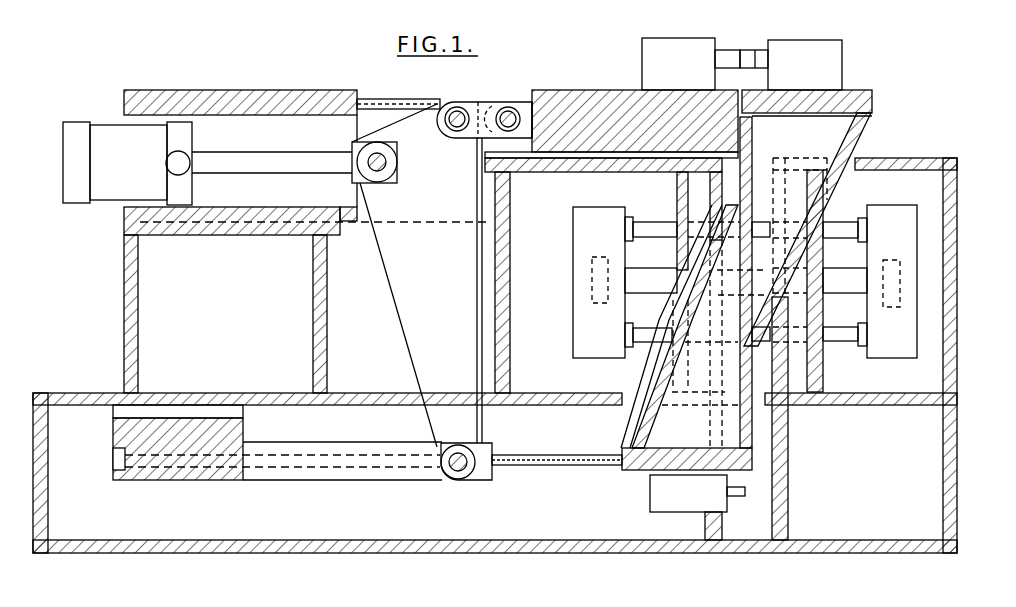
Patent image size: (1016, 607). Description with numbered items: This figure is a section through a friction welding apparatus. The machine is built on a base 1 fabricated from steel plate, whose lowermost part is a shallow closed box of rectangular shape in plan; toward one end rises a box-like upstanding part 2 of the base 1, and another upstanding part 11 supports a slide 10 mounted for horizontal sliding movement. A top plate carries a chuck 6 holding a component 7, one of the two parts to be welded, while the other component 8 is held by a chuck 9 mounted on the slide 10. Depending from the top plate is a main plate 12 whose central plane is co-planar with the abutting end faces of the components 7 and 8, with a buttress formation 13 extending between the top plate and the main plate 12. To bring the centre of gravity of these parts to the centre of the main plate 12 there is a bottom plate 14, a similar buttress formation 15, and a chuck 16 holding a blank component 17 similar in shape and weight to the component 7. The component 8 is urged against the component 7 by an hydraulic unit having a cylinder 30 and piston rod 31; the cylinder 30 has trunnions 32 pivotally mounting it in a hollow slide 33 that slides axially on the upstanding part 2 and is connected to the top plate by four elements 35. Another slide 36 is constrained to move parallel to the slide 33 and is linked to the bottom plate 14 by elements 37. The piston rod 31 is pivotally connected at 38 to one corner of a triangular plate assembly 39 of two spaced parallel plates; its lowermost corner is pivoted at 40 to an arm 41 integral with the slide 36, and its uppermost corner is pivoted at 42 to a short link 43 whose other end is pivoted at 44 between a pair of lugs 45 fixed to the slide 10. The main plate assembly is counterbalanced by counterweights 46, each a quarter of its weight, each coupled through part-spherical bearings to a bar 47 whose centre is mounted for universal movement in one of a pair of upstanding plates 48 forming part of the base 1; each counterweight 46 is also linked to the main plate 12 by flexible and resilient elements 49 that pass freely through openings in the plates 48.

The base 1 is at (443, 546).
The upstanding part 2 is at (128, 357).
The chuck 6 is at (823, 63).
The component 7 is at (757, 63).
The component 8 is at (725, 60).
The chuck 9 is at (658, 62).
The slide 10 is at (585, 107).
The upstanding part 11 is at (502, 227).
The main plate 12 is at (753, 133).
The buttress formation 13 is at (830, 128).
The bottom plate 14 is at (623, 472).
The buttress formation 15 is at (853, 98).
The chuck 16 is at (690, 507).
The blank component 17 is at (738, 497).
The cylinder 30 is at (140, 157).
The piston rod 31 is at (282, 163).
The trunnions 32 is at (192, 152).
The hollow slide 33 is at (255, 122).
The elements 35 is at (387, 101).
The slide 36 is at (157, 465).
The elements 37 is at (535, 467).
The pivotal connection 38 is at (388, 164).
The triangular plate assembly 39 is at (435, 274).
The pivotal connection 40 is at (452, 477).
The arm 41 is at (327, 463).
The pivotal connection 42 is at (453, 110).
The short link 43 is at (482, 106).
The pivotal connection 44 is at (509, 110).
The lugs 45 is at (533, 93).
The counterweight 46 is at (608, 349).
The bar 47 is at (643, 280).
The upstanding plates 48 is at (678, 184).
The flexible and resilient elements 49 is at (650, 232).